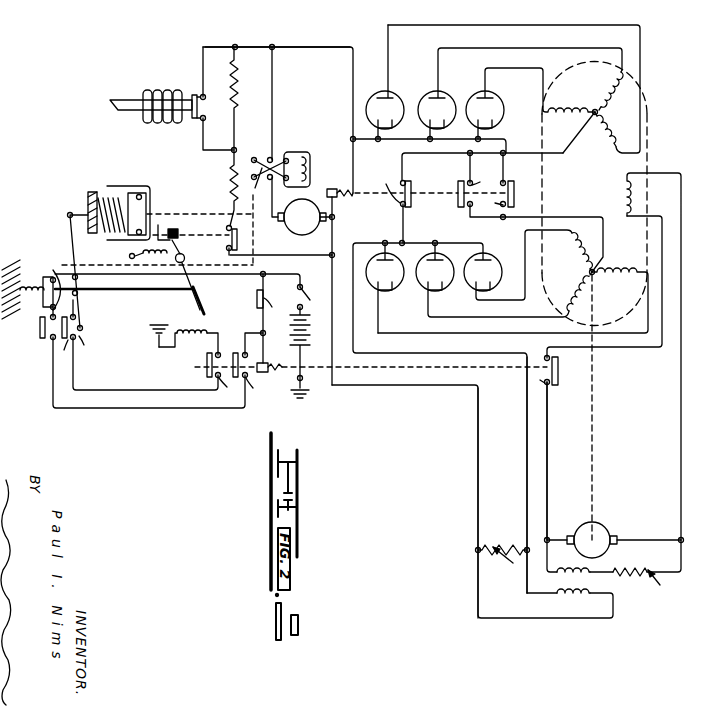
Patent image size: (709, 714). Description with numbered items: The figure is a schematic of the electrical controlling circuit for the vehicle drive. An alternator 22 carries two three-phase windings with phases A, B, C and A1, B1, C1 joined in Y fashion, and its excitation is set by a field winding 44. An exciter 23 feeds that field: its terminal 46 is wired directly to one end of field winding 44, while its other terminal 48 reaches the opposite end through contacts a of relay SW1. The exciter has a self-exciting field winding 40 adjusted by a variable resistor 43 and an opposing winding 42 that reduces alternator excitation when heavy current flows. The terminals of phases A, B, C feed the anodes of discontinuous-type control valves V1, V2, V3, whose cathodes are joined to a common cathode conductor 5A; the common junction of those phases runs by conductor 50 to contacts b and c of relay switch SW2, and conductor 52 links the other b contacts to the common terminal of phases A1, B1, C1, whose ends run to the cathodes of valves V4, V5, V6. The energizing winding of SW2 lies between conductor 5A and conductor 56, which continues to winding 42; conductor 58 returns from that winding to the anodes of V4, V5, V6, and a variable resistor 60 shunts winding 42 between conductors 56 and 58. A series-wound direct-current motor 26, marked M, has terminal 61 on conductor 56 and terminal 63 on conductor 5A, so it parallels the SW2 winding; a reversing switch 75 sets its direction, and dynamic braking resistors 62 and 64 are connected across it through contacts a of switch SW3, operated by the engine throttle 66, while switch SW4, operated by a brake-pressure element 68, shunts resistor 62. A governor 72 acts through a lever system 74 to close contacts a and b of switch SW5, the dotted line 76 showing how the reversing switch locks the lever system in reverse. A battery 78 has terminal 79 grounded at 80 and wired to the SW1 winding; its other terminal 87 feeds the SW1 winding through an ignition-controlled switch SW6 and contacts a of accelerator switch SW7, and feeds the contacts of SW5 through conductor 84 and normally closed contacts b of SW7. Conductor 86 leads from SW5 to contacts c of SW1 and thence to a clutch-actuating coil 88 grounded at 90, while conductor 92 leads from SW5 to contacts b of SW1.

The alternator 22 is at (650, 147).
The exciter 23 is at (620, 527).
The motor 26 is at (308, 186).
The field winding 40 is at (594, 576).
The field winding 42 is at (585, 598).
The variable resistor 43 is at (641, 566).
The field winding 44 is at (640, 190).
The terminal 46 is at (682, 541).
The terminal 48 is at (546, 538).
The conductor 50 is at (552, 156).
The conductor 52 is at (505, 217).
The conductor 5A is at (322, 62).
The conductor 56 is at (334, 302).
The conductor 58 is at (527, 460).
The variable current-controlling resistor 60 is at (497, 556).
The terminal 61 is at (334, 217).
The dynamic braking resistor 62 is at (236, 85).
The terminal 63 is at (305, 52).
The dynamic braking resistor 64 is at (235, 179).
The engine throttle 66 is at (191, 247).
The pressure element 68 is at (185, 90).
The governor 72 is at (120, 178).
The lever system 74 is at (65, 237).
The reversing switch 75 is at (285, 158).
The dotted line 76 is at (268, 211).
The battery 78 is at (312, 332).
The terminal 79 is at (304, 378).
The ground 80 is at (303, 399).
The conductor 84 is at (206, 298).
The conductor 86 is at (152, 388).
The terminal 87 is at (307, 305).
The clutch-actuating coil 88 is at (190, 337).
The ground 90 is at (161, 338).
The conductor 92 is at (160, 408).
The relay switch SW1 is at (497, 369).
The relay switch SW2 is at (424, 197).
The switch SW3 is at (203, 236).
The switch SW4 is at (158, 92).
The switch SW5 is at (90, 328).
The switch SW6 is at (315, 297).
The accelerator-actuated switch SW7 is at (233, 352).
The control valve V1 is at (425, 89).
The control valve V2 is at (470, 95).
The control valve V3 is at (380, 92).
The control valve V4 is at (443, 282).
The control valve V5 is at (397, 282).
The control valve V6 is at (500, 282).
The motor M is at (302, 217).
The phase A is at (614, 94).
The phase B is at (563, 113).
The phase C is at (514, 92).
The phase A1 is at (573, 279).
The phase B1 is at (618, 276).
The phase C1 is at (566, 262).